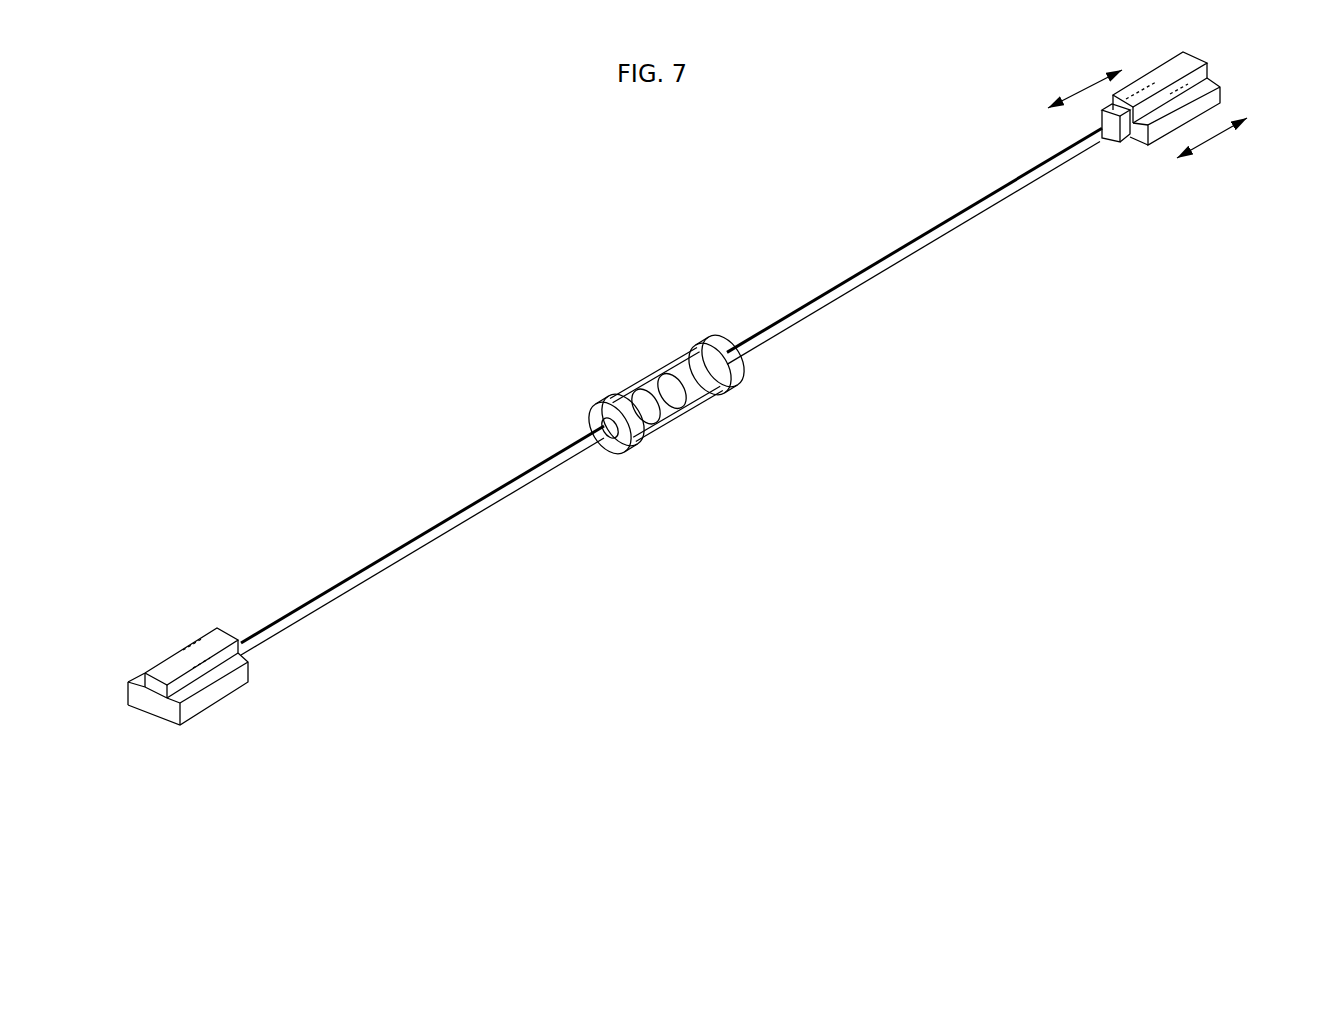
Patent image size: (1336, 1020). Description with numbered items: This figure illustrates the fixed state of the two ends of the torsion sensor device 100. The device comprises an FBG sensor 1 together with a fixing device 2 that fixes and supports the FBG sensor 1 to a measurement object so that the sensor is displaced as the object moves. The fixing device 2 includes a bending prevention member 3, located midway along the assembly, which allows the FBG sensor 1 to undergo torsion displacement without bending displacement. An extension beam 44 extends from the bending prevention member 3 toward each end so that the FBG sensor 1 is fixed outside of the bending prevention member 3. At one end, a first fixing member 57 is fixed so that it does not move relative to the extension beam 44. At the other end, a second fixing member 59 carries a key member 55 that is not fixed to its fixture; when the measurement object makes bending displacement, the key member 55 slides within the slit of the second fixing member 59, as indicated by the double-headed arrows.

The torsion sensor device 100 is at (292, 207).
The FBG sensor 1 is at (922, 235).
The fixing device 2 is at (593, 343).
The bending prevention member 3 is at (680, 427).
The extension beam 44 is at (862, 286).
The key member 55 is at (1118, 140).
The first fixing member 57 is at (215, 705).
The second fixing member 59 is at (1200, 128).